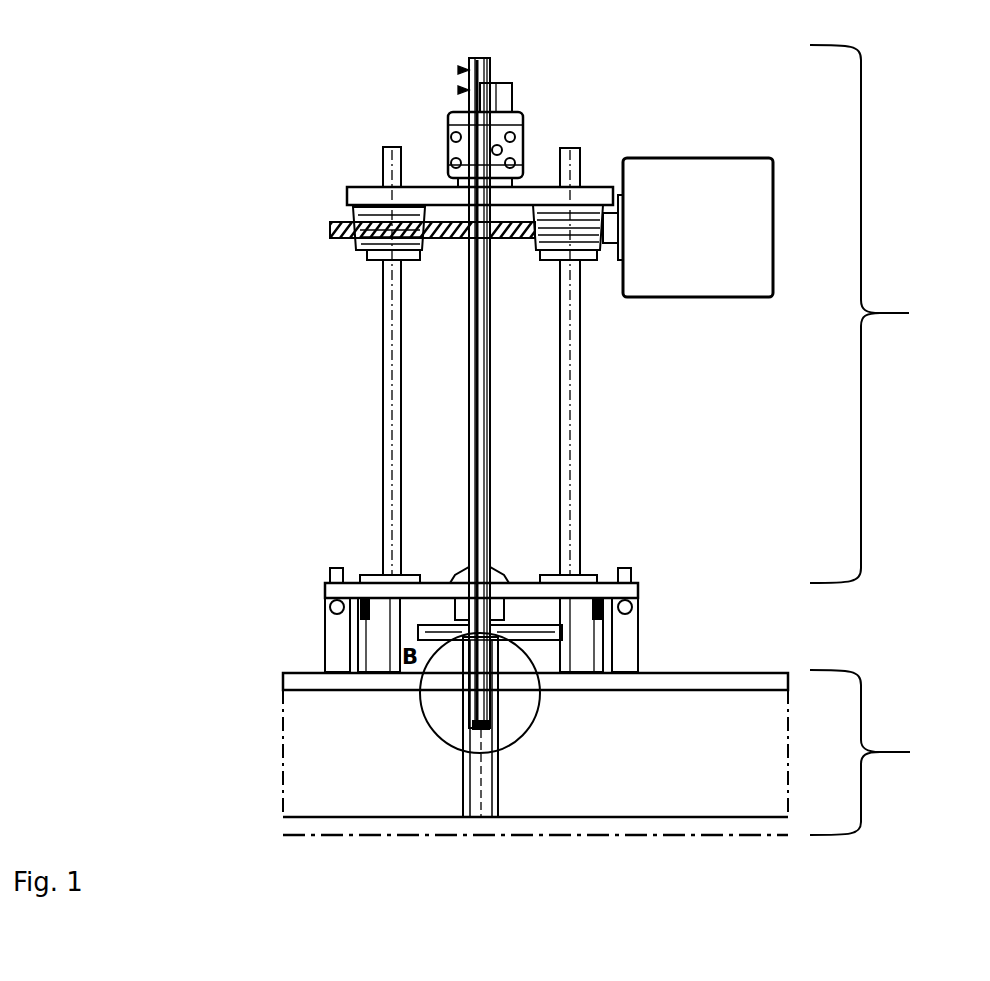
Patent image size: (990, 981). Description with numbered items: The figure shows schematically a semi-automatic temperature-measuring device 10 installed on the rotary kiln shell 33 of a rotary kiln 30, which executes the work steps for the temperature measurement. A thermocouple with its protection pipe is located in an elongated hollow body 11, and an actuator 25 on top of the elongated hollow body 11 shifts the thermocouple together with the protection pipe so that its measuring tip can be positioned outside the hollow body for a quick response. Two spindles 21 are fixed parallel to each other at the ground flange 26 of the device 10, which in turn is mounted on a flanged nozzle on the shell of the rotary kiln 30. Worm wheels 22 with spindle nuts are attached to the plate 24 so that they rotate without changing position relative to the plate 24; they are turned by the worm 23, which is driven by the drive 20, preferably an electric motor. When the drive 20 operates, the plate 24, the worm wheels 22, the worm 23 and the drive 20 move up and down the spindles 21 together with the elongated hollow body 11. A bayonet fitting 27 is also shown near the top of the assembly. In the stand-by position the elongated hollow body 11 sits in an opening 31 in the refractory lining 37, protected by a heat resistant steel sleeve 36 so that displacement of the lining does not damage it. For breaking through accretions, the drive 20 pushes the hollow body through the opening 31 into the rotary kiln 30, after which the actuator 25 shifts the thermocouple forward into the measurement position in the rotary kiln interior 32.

The device 10 is at (883, 314).
The elongated hollow body 11 is at (491, 428).
The drive 20 is at (700, 265).
The spindle 21 is at (383, 341).
The worm wheel 22 is at (370, 248).
The worm 23 is at (505, 241).
The plate 24 is at (348, 190).
The actuator 25 is at (518, 132).
The ground flange 26 is at (330, 576).
The bayonet fitting 27 is at (520, 162).
The rotary kiln 30 is at (886, 752).
The opening 31 is at (463, 817).
The rotary kiln interior 32 is at (535, 867).
The rotary kiln shell 33 is at (711, 672).
The sleeve 36 is at (498, 773).
The refractory lining 37 is at (608, 757).